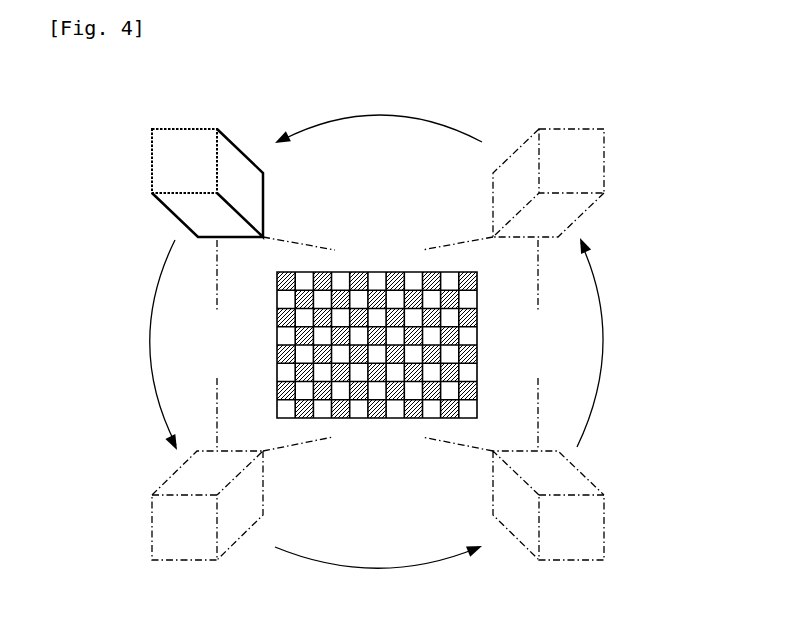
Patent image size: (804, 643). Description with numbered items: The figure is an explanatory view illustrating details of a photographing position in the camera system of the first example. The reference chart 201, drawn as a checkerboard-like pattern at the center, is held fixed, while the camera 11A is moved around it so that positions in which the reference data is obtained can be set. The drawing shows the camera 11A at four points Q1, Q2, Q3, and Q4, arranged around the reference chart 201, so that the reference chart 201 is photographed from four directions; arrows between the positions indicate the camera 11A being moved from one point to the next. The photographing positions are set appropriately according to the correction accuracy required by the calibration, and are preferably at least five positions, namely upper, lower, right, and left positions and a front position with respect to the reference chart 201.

The camera 11A is at (376, 346).
The point Q1 is at (163, 163).
The point Q2 is at (163, 528).
The point Q3 is at (590, 528).
The point Q4 is at (590, 162).
The reference chart 201 is at (478, 337).